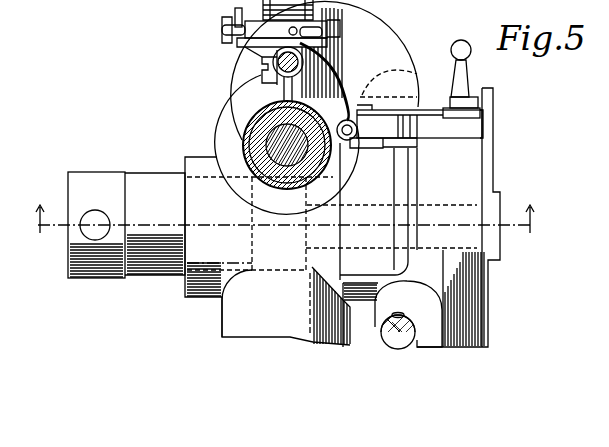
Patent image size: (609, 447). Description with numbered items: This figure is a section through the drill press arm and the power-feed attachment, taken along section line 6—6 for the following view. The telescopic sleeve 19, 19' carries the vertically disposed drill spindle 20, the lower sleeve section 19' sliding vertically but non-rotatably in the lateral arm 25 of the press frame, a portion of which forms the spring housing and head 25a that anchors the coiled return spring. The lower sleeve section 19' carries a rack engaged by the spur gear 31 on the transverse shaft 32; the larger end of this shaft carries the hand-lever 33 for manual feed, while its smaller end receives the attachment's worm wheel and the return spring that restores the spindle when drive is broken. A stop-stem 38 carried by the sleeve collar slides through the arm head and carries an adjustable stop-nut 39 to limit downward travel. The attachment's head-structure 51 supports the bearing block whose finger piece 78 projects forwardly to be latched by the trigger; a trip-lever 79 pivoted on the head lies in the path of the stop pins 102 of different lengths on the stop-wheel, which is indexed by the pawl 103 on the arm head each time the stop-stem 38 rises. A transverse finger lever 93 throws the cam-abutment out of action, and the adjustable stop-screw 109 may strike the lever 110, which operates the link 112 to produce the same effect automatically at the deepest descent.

The section line 6— 6 is at (283, 220).
The telescopic sleeve 19 is at (253, 143).
The lower sleeve section 19' is at (246, 144).
The drill spindle 20 is at (247, 170).
The lateral arm 25 is at (195, 298).
The spring housing and head 25a is at (378, 233).
The spur gear 31 is at (280, 273).
The shaft 32 is at (160, 182).
The hand-lever 33 is at (95, 210).
The stop-stem 38 is at (275, 55).
The stop-nut 39 is at (277, 73).
The head-structure 51 is at (478, 279).
The finger piece 78 is at (471, 53).
The trip-lever 79 is at (380, 19).
The finger lever 93 is at (352, 83).
The stop pins 102 is at (227, 25).
The pawl 103 is at (252, 50).
The stop-screw 109 is at (393, 68).
The lever 110 is at (380, 132).
The link 112 is at (438, 144).